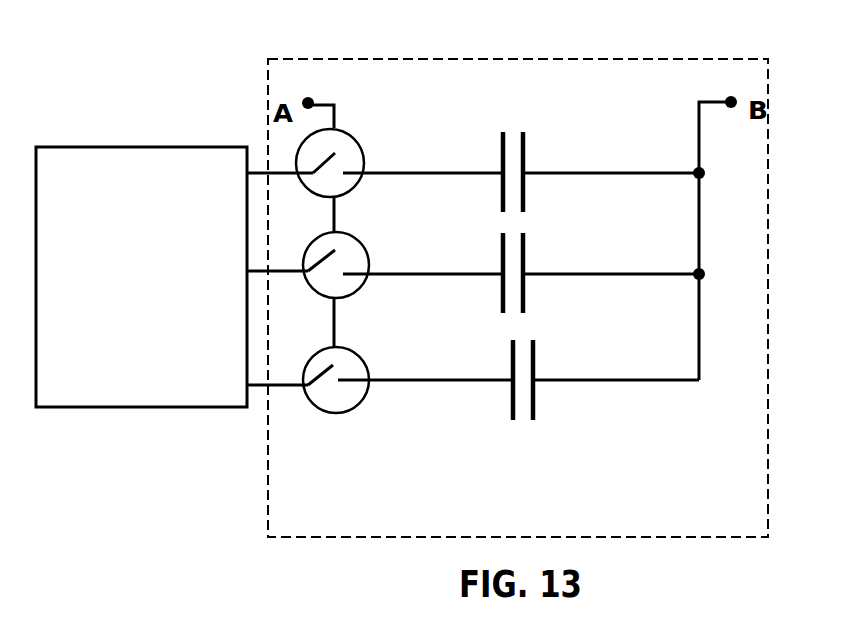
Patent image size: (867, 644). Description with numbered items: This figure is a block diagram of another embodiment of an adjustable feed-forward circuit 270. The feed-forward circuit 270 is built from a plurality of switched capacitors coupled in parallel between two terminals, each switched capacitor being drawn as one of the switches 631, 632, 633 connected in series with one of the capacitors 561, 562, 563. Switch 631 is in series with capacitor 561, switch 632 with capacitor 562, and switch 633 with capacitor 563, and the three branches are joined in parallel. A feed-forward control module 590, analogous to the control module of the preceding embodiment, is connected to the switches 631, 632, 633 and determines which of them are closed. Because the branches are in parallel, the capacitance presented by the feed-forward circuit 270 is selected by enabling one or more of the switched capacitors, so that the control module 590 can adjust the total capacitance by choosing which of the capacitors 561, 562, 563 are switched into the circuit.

The feed-forward circuit 270 is at (519, 487).
The feed-forward control module 590 is at (119, 350).
The switch 631 is at (362, 156).
The switch 632 is at (371, 259).
The switch 633 is at (358, 352).
The capacitor 561 is at (526, 162).
The capacitor 562 is at (526, 264).
The capacitor 563 is at (536, 366).